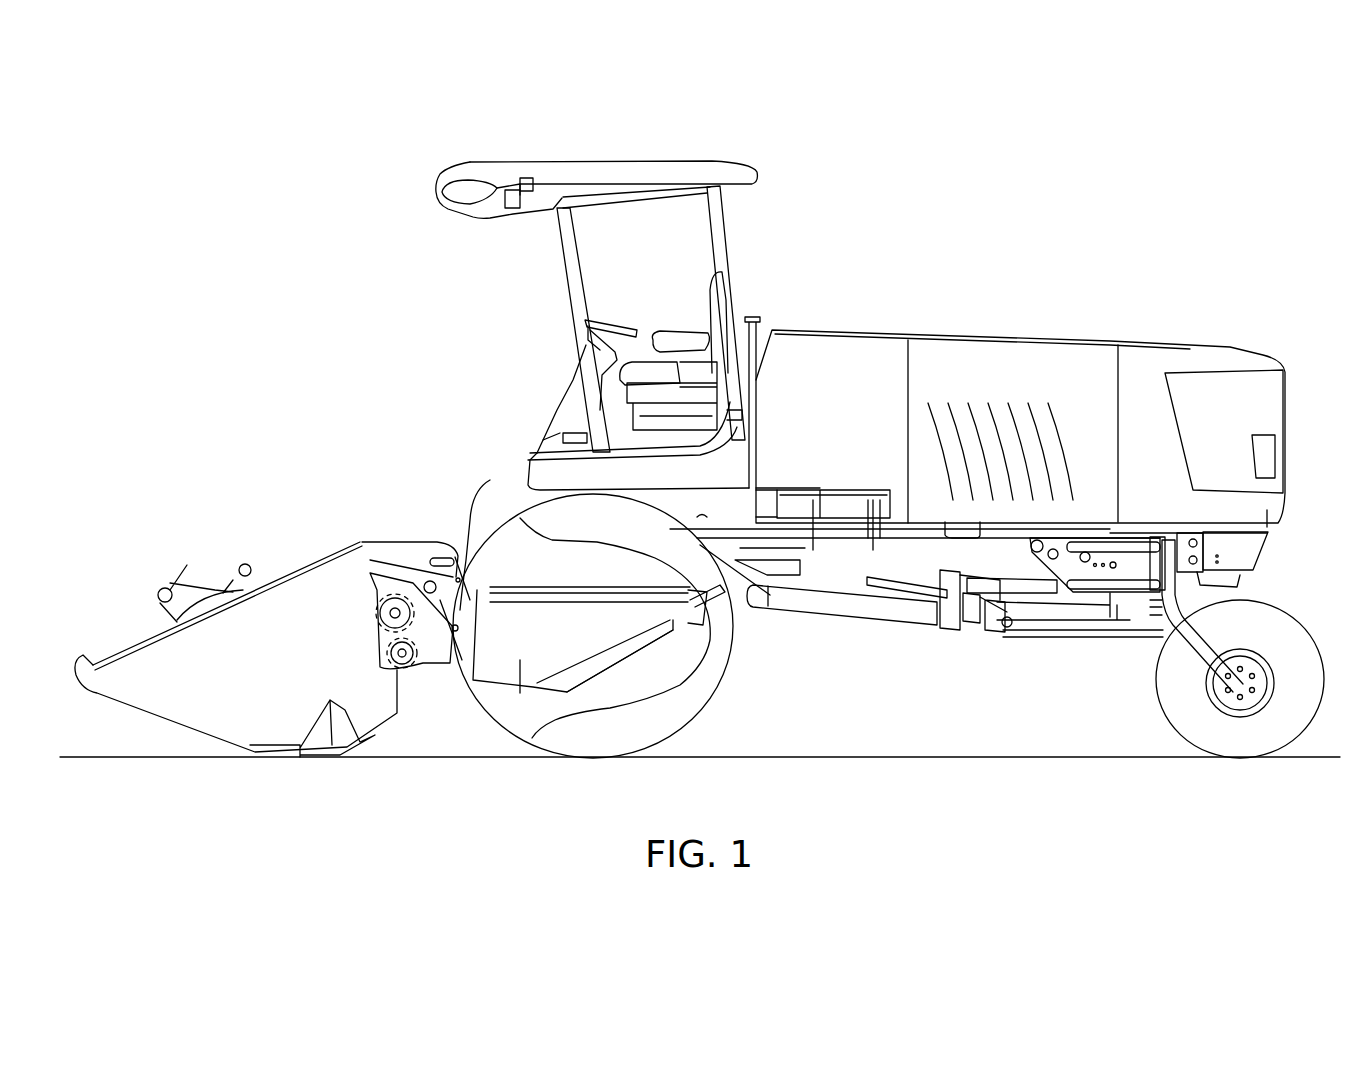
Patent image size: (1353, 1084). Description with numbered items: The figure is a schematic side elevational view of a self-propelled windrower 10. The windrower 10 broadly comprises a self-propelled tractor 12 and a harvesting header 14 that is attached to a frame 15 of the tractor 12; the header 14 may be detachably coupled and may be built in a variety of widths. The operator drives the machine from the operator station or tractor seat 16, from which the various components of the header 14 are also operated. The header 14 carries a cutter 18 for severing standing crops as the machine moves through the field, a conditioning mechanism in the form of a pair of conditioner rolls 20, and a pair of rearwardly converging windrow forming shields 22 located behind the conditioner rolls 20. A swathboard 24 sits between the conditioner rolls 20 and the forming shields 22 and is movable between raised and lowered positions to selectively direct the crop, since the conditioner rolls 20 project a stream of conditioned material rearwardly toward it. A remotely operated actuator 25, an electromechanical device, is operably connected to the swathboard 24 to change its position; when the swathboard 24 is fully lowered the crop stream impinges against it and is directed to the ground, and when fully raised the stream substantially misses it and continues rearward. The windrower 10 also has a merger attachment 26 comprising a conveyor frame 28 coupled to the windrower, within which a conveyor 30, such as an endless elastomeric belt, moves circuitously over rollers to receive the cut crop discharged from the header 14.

The self-propelled windrower 10 is at (963, 214).
The self-propelled tractor 12 is at (1050, 336).
The harvesting header 14 is at (300, 572).
The frame 15 is at (833, 541).
The operator station or tractor seat 16 is at (706, 306).
The cutter 18 is at (260, 757).
The conditioner rolls 20 is at (387, 652).
The windrow forming shields 22 is at (522, 660).
The swathboard 24 is at (476, 562).
The remotely operated actuator 25 is at (397, 540).
The merger attachment 26 is at (1045, 664).
The conveyor frame 28 is at (920, 627).
The conveyor 30 is at (867, 618).